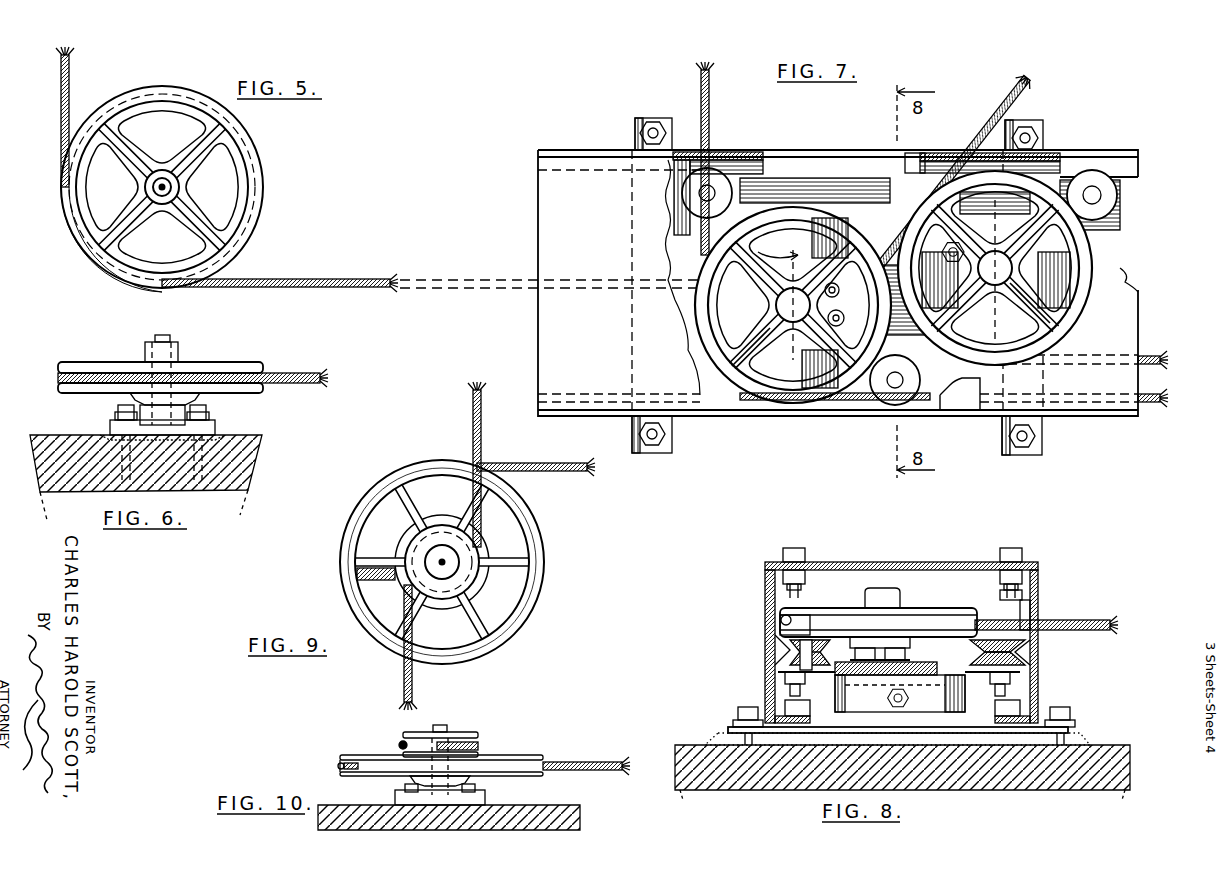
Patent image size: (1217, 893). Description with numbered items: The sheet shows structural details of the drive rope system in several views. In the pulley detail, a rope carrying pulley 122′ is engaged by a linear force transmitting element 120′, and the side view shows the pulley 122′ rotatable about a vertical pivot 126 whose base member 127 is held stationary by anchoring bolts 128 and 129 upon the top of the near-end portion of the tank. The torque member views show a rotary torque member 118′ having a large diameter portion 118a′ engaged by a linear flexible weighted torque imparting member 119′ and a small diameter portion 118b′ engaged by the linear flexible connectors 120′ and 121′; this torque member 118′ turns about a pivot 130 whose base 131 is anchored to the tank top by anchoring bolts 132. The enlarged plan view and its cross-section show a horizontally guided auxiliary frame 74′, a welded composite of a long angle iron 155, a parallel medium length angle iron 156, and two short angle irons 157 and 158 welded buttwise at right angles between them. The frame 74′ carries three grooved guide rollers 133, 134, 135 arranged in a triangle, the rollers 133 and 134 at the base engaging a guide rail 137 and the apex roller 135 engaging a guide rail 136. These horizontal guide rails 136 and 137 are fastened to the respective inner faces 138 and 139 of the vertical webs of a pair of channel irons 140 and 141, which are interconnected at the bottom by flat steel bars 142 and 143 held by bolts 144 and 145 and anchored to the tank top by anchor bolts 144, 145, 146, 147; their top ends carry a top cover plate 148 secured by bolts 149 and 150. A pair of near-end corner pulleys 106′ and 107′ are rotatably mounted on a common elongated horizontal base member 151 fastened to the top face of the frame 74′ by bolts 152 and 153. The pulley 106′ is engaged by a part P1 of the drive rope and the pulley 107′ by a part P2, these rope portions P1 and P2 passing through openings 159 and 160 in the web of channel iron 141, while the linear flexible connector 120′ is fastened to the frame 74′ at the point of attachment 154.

In FIG. 5, the pulley 122′ is at (262, 200).
In FIG. 6, the pulley 122′ is at (240, 362).
In FIG. 5, the linear flexible connector 120′ is at (280, 279).
In FIG. 6, the linear flexible connector 120′ is at (280, 383).
In FIG. 9, the linear flexible connector 120′ is at (404, 672).
In FIG. 10, the linear flexible connector 120′ is at (400, 745).
In FIG. 6, the vertical pivot 126 is at (178, 354).
In FIG. 6, the base member 127 is at (215, 428).
In FIG. 6, the anchoring bolt 128 is at (110, 410).
In FIG. 6, the anchoring bolt 129 is at (206, 416).
In FIG. 9, the torque member 118′ is at (352, 489).
In FIG. 9, the large diameter portion 118a′ is at (540, 590).
In FIG. 10, the large diameter portion 118a′ is at (530, 757).
In FIG. 9, the small diameter portion 118b′ is at (442, 525).
In FIG. 9, the linear flexible weighted torque imparting member 119′ is at (545, 471).
In FIG. 10, the linear flexible weighted torque imparting member 119′ is at (597, 762).
In FIG. 9, the linear flexible connector 121′ is at (473, 440).
In FIG. 10, the linear flexible connector 121′ is at (478, 748).
In FIG. 10, the pivot 130 is at (447, 725).
In FIG. 10, the base 131 is at (485, 796).
In FIG. 10, the anchoring bolts 132 is at (405, 788).
In FIG. 7, the channel iron 141 is at (895, 150).
In FIG. 8, the channel iron 141 is at (1038, 570).
In FIG. 7, the flat steel bar 142 is at (635, 136).
In FIG. 8, the flat steel bar 142 is at (1068, 730).
In FIG. 7, the flat steel bar 143 is at (1043, 140).
In FIG. 7, the bolt 144 is at (660, 120).
In FIG. 8, the bolt 144 is at (780, 707).
In FIG. 7, the bolt 145 is at (672, 444).
In FIG. 8, the bolt 145 is at (1020, 705).
In FIG. 7, the anchor bolt 146 is at (1042, 444).
In FIG. 7, the anchor bolt 147 is at (1028, 125).
In FIG. 8, the top cover plate 148 is at (885, 562).
In FIG. 8, the bolt 149 is at (796, 555).
In FIG. 8, the bolt 150 is at (1005, 555).
In FIG. 7, the opening 159 is at (735, 152).
In FIG. 8, the opening 159 is at (1030, 612).
In FIG. 7, the grooved guide roller 133 is at (740, 195).
In FIG. 8, the grooved guide roller 133 is at (1025, 645).
In FIG. 7, the guide rail 137 is at (1050, 153).
In FIG. 8, the guide rail 137 is at (1025, 657).
In FIG. 7, the opening 160 is at (950, 153).
In FIG. 7, the long angle iron 155 is at (1120, 222).
In FIG. 7, the grooved guide roller 134 is at (1101, 195).
In FIG. 7, the drive rope part P1 is at (709, 110).
In FIG. 8, the drive rope part P1 is at (1075, 618).
In FIG. 7, the drive rope part P2 is at (1012, 97).
In FIG. 7, the near-end corner pulley 106′ is at (700, 340).
In FIG. 8, the near-end corner pulley 106′ is at (945, 612).
In FIG. 7, the near-end corner pulley 107′ is at (1085, 260).
In FIG. 7, the bolt 152 is at (776, 306).
In FIG. 8, the bolt 152 is at (905, 650).
In FIG. 7, the medium length angle iron 156 is at (820, 340).
In FIG. 7, the auxiliary frame 74′ is at (777, 246).
In FIG. 7, the horizontal base member 151 is at (887, 235).
In FIG. 7, the short angle iron 157 is at (812, 380).
In FIG. 7, the bolt 153 is at (955, 265).
In FIG. 7, the short angle iron 158 is at (1040, 300).
In FIG. 7, the grooved guide roller 135 is at (887, 397).
In FIG. 8, the grooved guide roller 135 is at (825, 640).
In FIG. 7, the guide rail 136 is at (825, 407).
In FIG. 8, the guide rail 136 is at (785, 650).
In FIG. 7, the channel iron 140 is at (930, 418).
In FIG. 8, the channel iron 140 is at (765, 570).
In FIG. 8, the inner face 138 is at (775, 608).
In FIG. 8, the inner face 139 is at (1010, 600).
In FIG. 8, the point of attachment 154 is at (910, 705).